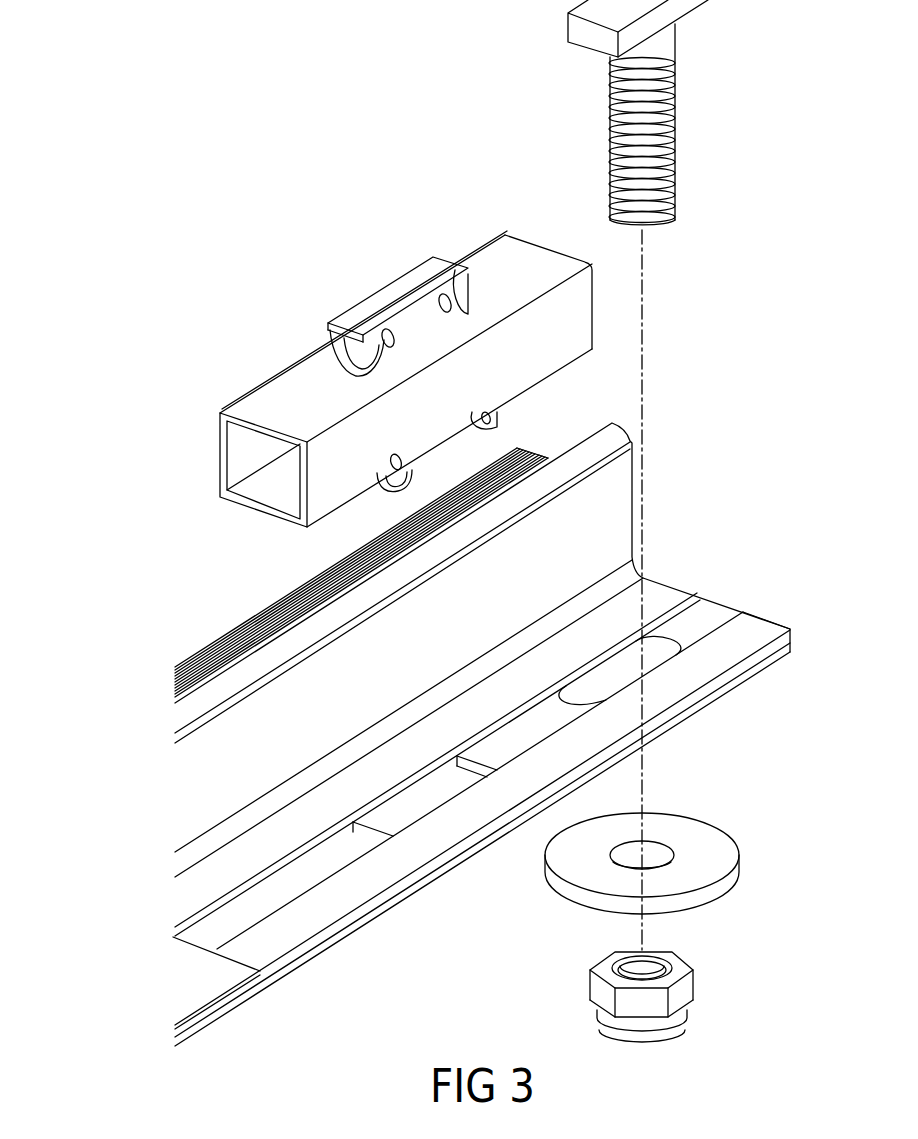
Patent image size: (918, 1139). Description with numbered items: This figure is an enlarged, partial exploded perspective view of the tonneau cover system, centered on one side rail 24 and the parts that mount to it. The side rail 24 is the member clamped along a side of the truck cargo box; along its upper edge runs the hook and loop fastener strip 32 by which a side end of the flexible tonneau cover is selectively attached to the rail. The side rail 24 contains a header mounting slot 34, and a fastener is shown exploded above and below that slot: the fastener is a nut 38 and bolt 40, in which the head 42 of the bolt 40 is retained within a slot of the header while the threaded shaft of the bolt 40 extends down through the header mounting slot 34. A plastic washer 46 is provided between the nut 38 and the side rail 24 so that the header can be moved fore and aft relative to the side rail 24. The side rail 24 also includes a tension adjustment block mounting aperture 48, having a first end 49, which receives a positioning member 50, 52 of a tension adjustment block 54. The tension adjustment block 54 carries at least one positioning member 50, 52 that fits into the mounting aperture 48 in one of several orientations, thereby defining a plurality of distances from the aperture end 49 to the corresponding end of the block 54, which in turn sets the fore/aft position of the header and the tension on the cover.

The side rail 24 is at (207, 787).
The hook and loop fastener strip 32 is at (242, 633).
The header mounting slot 34 is at (677, 647).
The nut 38 is at (683, 1000).
The bolt 40 is at (656, 156).
The head 42 is at (685, 2).
The plastic washer 46 is at (706, 853).
The tension adjustment block mounting aperture 48 is at (422, 802).
The first end of the aperture 49 is at (378, 833).
The positioning member 50 is at (443, 451).
The positioning member 52 is at (400, 294).
The tension adjustment block 54 is at (262, 373).